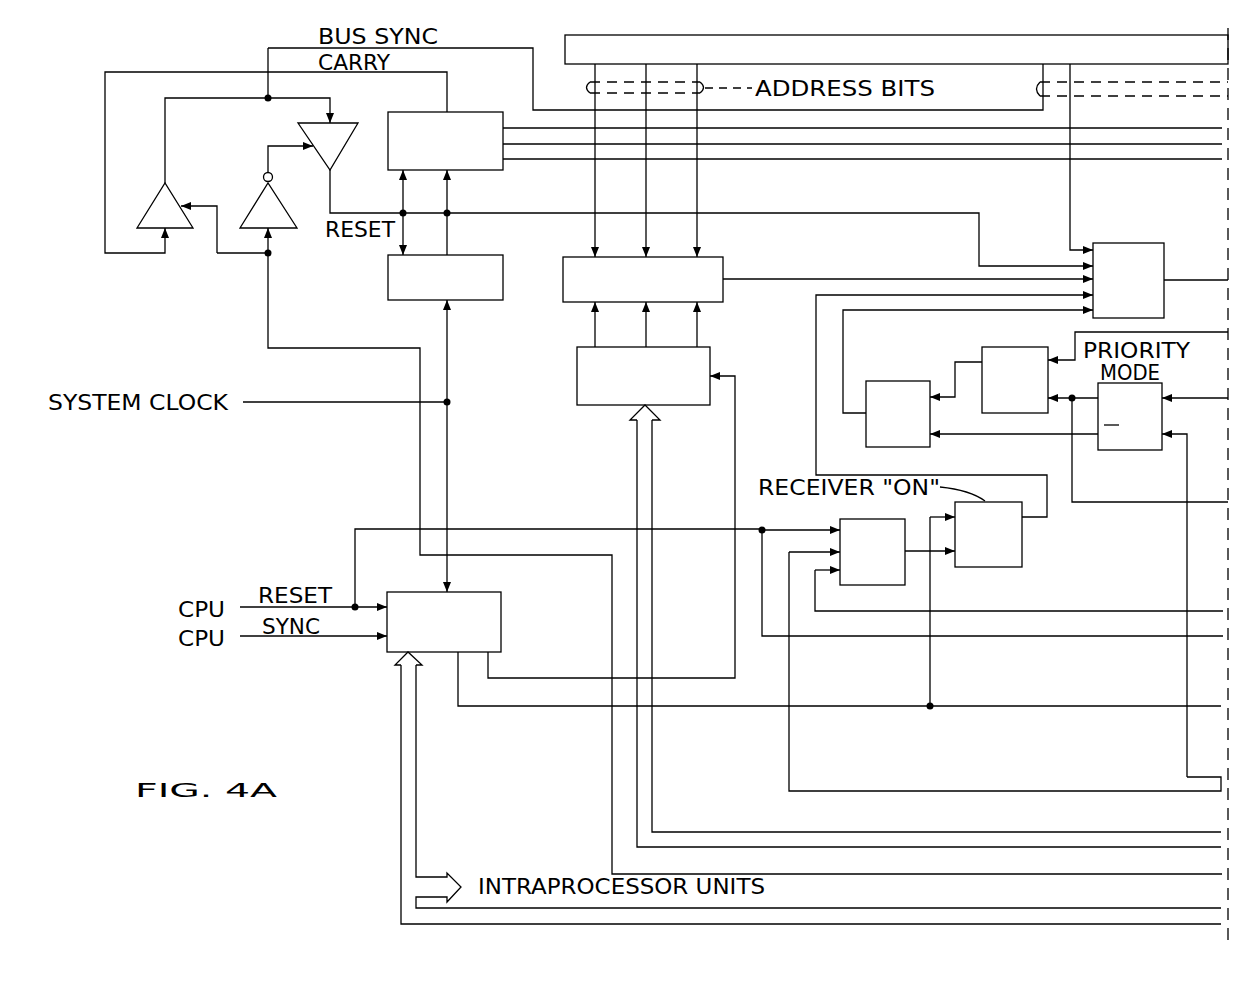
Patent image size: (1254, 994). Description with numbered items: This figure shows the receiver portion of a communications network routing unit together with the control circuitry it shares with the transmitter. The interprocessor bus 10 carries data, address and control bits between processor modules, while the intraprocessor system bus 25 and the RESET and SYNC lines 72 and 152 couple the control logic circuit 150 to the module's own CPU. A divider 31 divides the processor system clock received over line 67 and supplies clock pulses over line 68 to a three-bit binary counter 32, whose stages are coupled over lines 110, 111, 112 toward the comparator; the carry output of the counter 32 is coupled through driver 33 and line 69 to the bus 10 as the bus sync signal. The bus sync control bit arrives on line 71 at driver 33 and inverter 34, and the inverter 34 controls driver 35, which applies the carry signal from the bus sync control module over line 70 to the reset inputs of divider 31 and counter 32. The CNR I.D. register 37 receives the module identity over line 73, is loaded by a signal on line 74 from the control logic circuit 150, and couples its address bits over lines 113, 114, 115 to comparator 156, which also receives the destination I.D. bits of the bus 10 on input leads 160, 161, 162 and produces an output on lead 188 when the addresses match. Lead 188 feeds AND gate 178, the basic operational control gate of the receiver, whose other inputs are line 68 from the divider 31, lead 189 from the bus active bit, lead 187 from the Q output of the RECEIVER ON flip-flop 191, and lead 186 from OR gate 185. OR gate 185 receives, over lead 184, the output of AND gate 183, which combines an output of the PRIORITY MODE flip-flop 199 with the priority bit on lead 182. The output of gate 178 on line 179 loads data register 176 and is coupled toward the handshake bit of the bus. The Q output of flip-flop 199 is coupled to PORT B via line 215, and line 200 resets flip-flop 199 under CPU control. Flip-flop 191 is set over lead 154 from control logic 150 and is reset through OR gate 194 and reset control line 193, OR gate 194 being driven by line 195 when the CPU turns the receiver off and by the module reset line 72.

The interprocessor bus 10 is at (590, 35).
The intraprocessor system bus 25 is at (400, 745).
The divider circuit 31 is at (388, 292).
The counter 32 is at (460, 113).
The driver 33 is at (158, 210).
The inverter 34 is at (263, 207).
The driver 35 is at (310, 133).
The CNR I.D. register 37 is at (577, 384).
The line 67 is at (449, 433).
The line 68 is at (450, 236).
The line 69 is at (292, 47).
The line 70 is at (358, 213).
The line 71 is at (266, 303).
The RESET line 72 is at (355, 550).
The line 73 is at (648, 608).
The line 74 is at (535, 677).
The line 110 is at (1168, 128).
The line 111 is at (865, 146).
The line 112 is at (972, 160).
The line 113 is at (593, 317).
The line 114 is at (644, 332).
The line 115 is at (699, 328).
The control logic circuit 150 is at (501, 598).
The SYNC line 152 is at (252, 637).
The lead 154 is at (932, 592).
The comparator 156 is at (722, 296).
The input lead 160 is at (593, 172).
The input lead 161 is at (644, 192).
The input lead 162 is at (699, 198).
The data register 176 is at (1145, 611).
The AND gate 178 is at (1147, 245).
The line 179 is at (1215, 278).
The lead 182 is at (1203, 330).
The AND gate 183 is at (1002, 352).
The lead 184 is at (955, 363).
The OR gate 185 is at (912, 448).
The input lead 186 is at (845, 325).
The input lead 187 is at (816, 380).
The output lead 188 is at (835, 278).
The input lead 189 is at (1070, 203).
The RECEIVER ON flip-flop 191 is at (1022, 553).
The reset control line 193 is at (921, 550).
The OR gate 194 is at (857, 527).
The line 195 is at (918, 792).
The PRIORITY MODE flip-flop 199 is at (1136, 440).
The line 200 is at (1187, 670).
The line 215 is at (1172, 502).